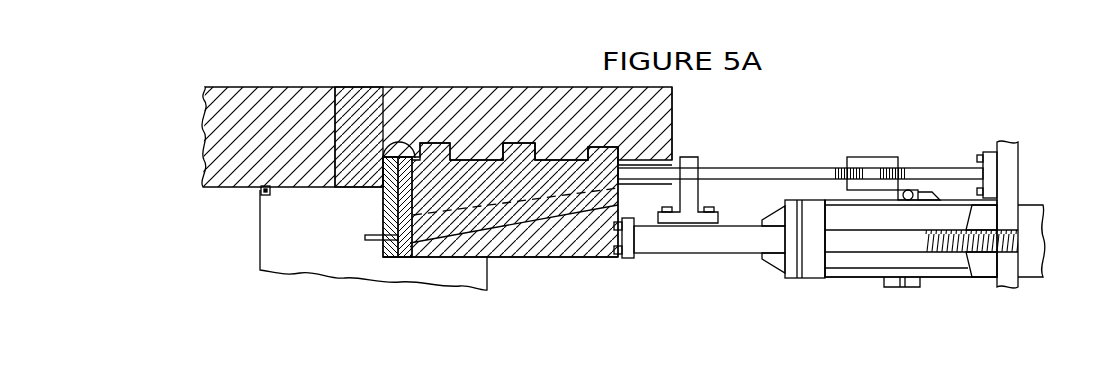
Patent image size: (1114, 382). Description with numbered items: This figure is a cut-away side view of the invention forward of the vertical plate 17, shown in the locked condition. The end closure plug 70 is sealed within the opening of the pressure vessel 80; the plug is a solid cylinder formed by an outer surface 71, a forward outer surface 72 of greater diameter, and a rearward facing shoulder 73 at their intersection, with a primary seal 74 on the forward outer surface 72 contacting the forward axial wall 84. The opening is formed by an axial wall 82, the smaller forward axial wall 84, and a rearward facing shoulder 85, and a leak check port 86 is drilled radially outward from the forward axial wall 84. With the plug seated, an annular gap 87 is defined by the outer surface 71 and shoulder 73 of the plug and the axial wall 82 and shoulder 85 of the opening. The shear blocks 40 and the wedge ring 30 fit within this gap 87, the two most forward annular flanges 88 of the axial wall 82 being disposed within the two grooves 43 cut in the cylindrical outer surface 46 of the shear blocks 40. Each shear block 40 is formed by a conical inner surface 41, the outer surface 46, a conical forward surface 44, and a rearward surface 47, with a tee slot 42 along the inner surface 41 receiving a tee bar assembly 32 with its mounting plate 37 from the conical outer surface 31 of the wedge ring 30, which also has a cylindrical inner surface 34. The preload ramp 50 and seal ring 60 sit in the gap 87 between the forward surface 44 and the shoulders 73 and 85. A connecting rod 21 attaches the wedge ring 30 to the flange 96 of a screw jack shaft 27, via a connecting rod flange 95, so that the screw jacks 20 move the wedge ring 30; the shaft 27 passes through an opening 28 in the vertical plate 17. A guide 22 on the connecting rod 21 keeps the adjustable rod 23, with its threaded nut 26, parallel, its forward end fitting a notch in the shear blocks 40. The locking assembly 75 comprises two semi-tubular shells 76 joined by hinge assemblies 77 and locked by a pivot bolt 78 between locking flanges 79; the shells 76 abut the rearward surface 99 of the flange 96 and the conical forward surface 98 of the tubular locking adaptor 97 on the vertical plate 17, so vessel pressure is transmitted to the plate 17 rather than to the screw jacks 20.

The vertical plate 17 is at (1020, 160).
The screw jacks 20 is at (1043, 215).
The connecting rod 21 is at (724, 253).
The guide 22 is at (700, 197).
The adjustable rod 23 is at (774, 168).
The left-hand, right-hand threaded nut 26 is at (866, 157).
The screw jack shaft 27 is at (950, 228).
The openings 28 is at (988, 262).
The wedge ring 30 is at (598, 260).
The conical outer surface 31 is at (520, 230).
The tee bar assemblies 32 is at (622, 195).
The cylindrical inner surface 34 is at (618, 258).
The mounting plate 37 is at (622, 207).
The shear blocks 40 is at (443, 142).
The conical inner surface 41 is at (502, 257).
The tee slot 42 is at (560, 235).
The grooves 43 is at (492, 145).
The conical forward surface 44 is at (413, 142).
The cylindrical outer surface 46 is at (530, 157).
The rearward surface 47 is at (623, 157).
The preload ramp 50 is at (398, 260).
The seal ring 60 is at (385, 260).
The end closure plug 70 is at (258, 258).
The outer surface 71 is at (462, 262).
The forward outer surface 72 is at (347, 187).
The rearward facing shoulder 73 is at (383, 215).
The primary seal 74 is at (258, 190).
The locking assembly 75 is at (860, 283).
The semi-tubular shells 76 is at (938, 279).
The hinge assemblies 77 is at (903, 289).
The pivot bolt 78 is at (906, 190).
The locking flanges 79 is at (932, 200).
The pressure vessel 80 is at (677, 118).
The axial wall 82 is at (617, 152).
The forward axial wall 84 is at (358, 185).
The rearward facing shoulder 85 is at (372, 160).
The leak check port 86 is at (335, 87).
The annular gap 87 is at (455, 207).
The annular flanges 88 is at (570, 157).
The connecting rod flange 95 is at (790, 278).
The flange 96 is at (812, 278).
The tubular locking adaptor 97 is at (1000, 288).
The conical forward surface 98 is at (968, 262).
The rearward surface 99 is at (833, 270).